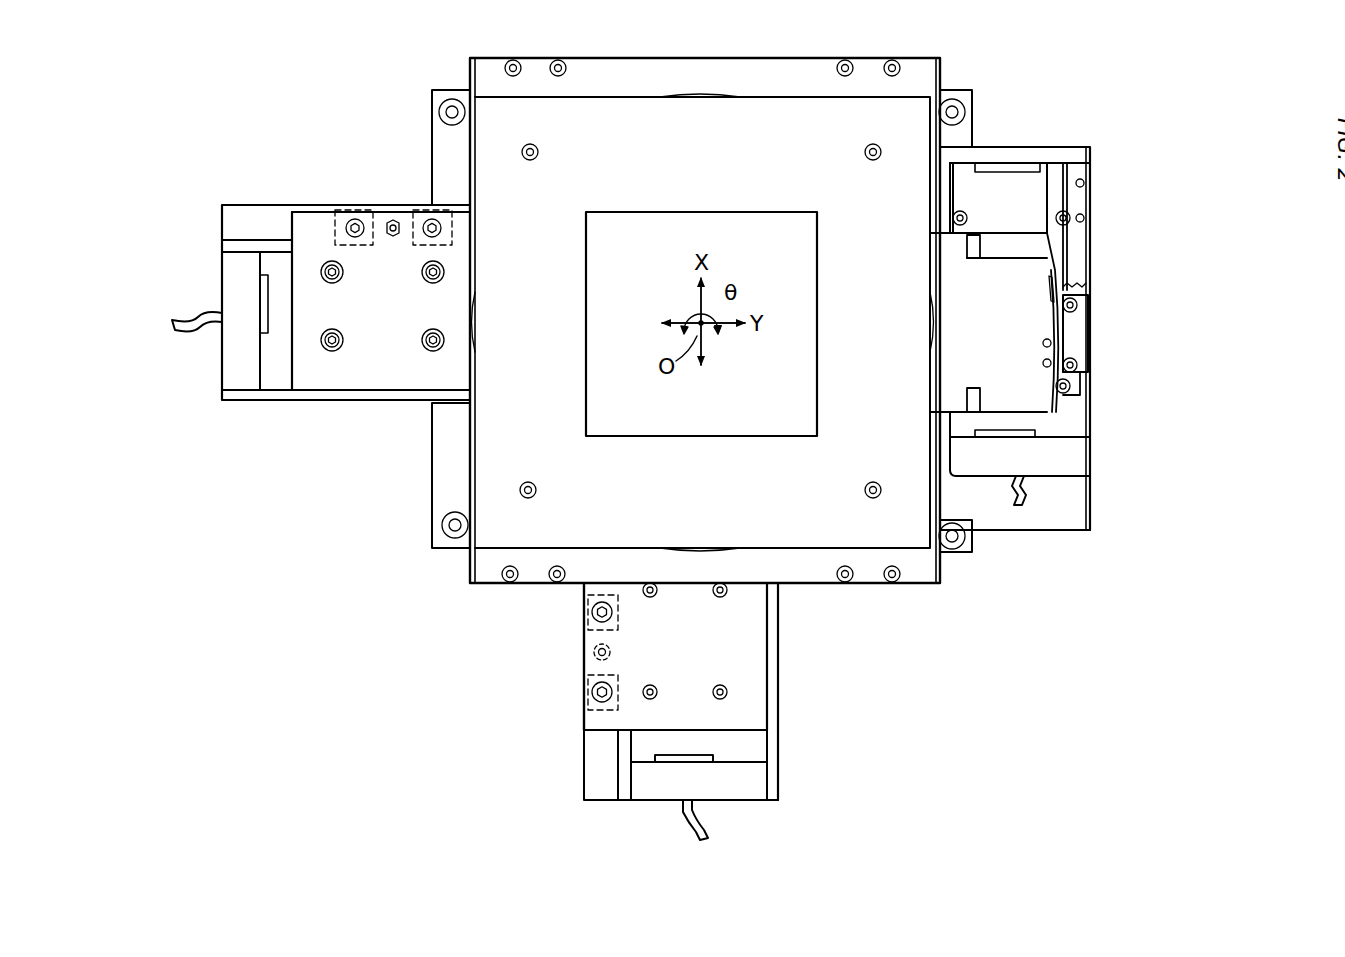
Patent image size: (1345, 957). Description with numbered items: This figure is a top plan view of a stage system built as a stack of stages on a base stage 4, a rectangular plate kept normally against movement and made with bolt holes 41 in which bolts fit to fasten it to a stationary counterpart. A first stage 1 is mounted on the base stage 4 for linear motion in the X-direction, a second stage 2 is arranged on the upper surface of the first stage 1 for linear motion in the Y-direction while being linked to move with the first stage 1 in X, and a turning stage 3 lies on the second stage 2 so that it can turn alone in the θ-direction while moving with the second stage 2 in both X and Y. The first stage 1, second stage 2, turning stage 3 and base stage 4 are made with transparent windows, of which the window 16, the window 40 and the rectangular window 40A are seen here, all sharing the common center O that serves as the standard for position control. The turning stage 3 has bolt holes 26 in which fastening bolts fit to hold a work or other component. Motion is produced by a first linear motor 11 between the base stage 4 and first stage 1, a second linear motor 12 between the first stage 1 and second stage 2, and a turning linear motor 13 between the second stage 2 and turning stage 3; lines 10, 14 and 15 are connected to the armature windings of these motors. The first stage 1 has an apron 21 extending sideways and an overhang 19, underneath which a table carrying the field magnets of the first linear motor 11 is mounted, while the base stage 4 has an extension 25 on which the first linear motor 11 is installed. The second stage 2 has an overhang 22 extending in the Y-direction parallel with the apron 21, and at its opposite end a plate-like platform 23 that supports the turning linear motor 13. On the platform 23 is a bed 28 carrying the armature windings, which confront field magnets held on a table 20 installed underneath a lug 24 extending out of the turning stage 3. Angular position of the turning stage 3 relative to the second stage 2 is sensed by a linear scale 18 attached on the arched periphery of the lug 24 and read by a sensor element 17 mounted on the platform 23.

The first stage 1 is at (265, 215).
The second stage 2 is at (382, 290).
The turning stage 3 is at (766, 131).
The base stage 4 is at (440, 470).
The line 10 is at (682, 818).
The first linear motor 11 is at (750, 745).
The second linear motor 12 is at (275, 372).
The turning linear motor 13 is at (1030, 205).
The line 14 is at (1032, 490).
The line 15 is at (200, 345).
The transparent window 16 is at (701, 324).
The sensor element 17 is at (1085, 310).
The linear scale 18 is at (1058, 290).
The overhang 19 is at (740, 640).
The table 20 is at (1030, 400).
The apron 21 is at (236, 230).
The overhang 22 is at (383, 350).
The platform 23 is at (1016, 520).
The lug 24 is at (1010, 327).
The extension 25 is at (775, 675).
The bolt hole 26 is at (540, 152).
The bed 28 is at (1055, 235).
The transparent window 40 is at (701, 324).
The rectangular window 40A is at (676, 436).
The bolt hole 41 is at (446, 111).